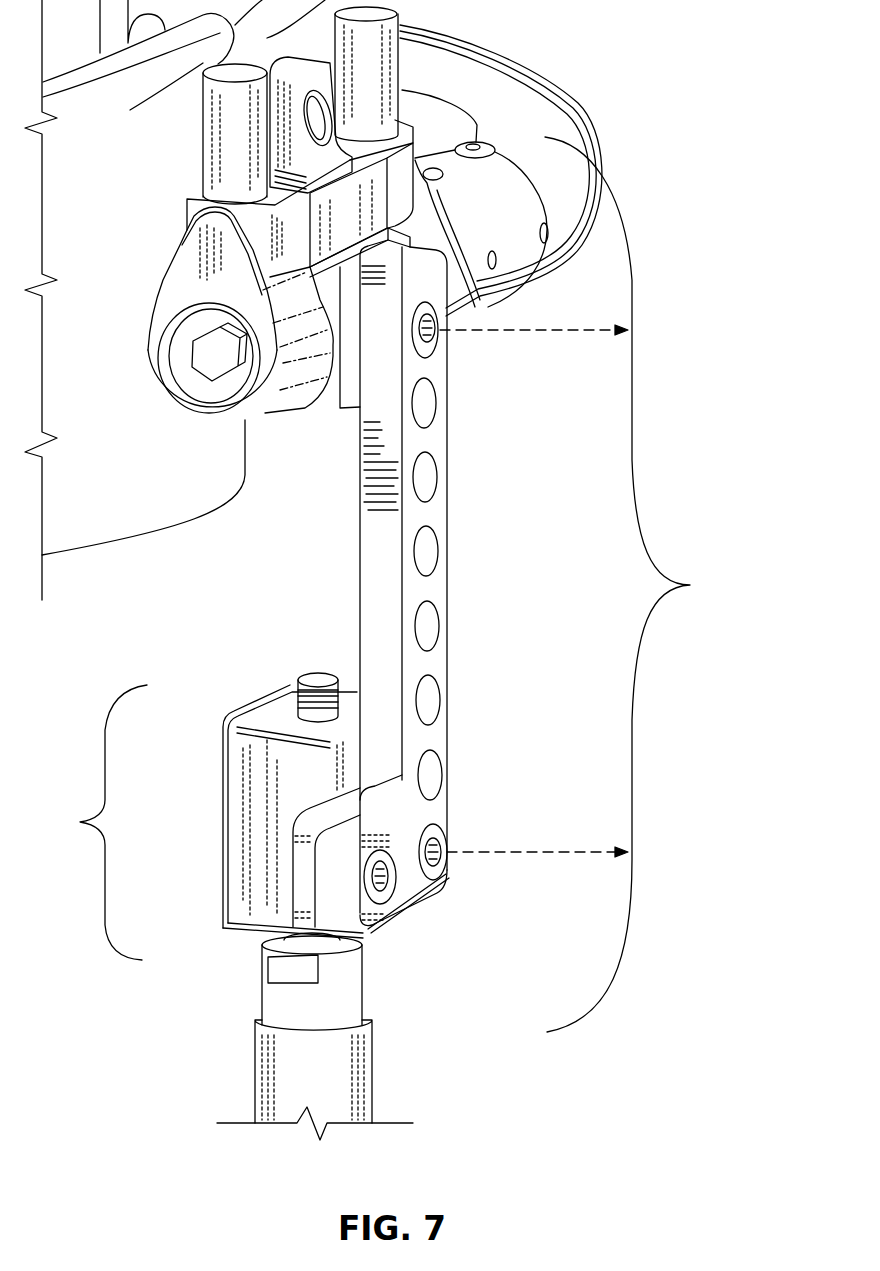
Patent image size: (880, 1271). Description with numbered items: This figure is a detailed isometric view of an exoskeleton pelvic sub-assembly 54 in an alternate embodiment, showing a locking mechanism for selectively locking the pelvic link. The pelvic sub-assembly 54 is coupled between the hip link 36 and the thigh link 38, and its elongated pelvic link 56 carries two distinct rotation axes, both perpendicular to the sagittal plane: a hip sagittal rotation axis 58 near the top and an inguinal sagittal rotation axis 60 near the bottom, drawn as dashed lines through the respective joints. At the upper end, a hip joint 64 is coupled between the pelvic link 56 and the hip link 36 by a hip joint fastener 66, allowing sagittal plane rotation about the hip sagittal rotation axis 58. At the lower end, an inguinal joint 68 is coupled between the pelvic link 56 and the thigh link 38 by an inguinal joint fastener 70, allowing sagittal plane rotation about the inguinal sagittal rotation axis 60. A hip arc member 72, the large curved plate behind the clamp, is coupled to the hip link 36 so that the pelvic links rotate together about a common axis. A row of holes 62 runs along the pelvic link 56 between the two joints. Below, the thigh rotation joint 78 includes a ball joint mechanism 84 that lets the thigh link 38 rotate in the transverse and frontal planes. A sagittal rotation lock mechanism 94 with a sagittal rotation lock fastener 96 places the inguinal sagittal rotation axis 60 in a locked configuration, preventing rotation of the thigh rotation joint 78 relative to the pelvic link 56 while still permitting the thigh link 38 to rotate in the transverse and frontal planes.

The hip link 36 is at (320, 400).
The thigh link 38 is at (347, 1087).
The exoskeleton pelvic sub-assembly 54 is at (690, 585).
The pelvic link 56 is at (383, 566).
The hip sagittal rotation axis 58 is at (364, 346).
The inguinal sagittal rotation axis 60 is at (592, 857).
The adjustment holes 62 is at (427, 630).
The hip joint 64 is at (434, 340).
The hip joint fastener 66 is at (433, 322).
The inguinal joint 68 is at (445, 843).
The inguinal joint fastener 70 is at (444, 857).
The hip arc member 72 is at (552, 113).
The thigh rotation joint 78 is at (80, 822).
The ball joint mechanism 84 is at (240, 858).
The sagittal rotation lock mechanism 94 is at (383, 900).
The sagittal rotation lock fastener 96 is at (390, 897).